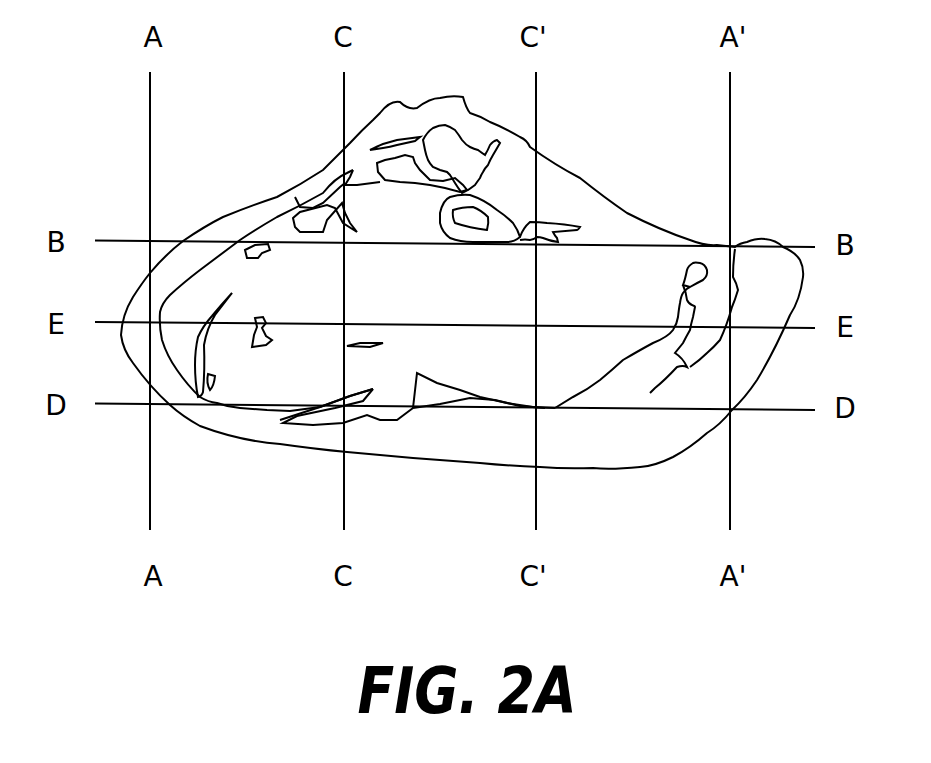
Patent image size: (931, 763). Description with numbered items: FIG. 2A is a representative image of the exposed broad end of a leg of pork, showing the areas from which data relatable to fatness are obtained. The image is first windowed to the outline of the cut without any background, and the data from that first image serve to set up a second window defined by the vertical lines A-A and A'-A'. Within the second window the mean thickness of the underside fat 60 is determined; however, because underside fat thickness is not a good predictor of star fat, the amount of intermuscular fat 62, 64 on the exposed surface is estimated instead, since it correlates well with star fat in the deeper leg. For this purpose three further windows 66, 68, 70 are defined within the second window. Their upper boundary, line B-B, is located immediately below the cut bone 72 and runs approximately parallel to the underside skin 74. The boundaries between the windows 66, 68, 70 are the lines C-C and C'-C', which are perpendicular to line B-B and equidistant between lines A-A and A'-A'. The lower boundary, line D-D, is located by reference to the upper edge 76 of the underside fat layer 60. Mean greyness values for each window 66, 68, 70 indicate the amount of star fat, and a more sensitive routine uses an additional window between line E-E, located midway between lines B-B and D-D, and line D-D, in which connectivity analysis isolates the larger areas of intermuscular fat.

The underside fat 60 is at (235, 422).
The intermuscular fat 62 is at (215, 312).
The intermuscular fat 64 is at (470, 398).
The window 66 is at (277, 309).
The window 68 is at (419, 327).
The window 70 is at (584, 327).
The cut bone 72 is at (477, 217).
The underside skin 74 is at (397, 459).
The upper edge of the underside fat layer 76 is at (560, 408).